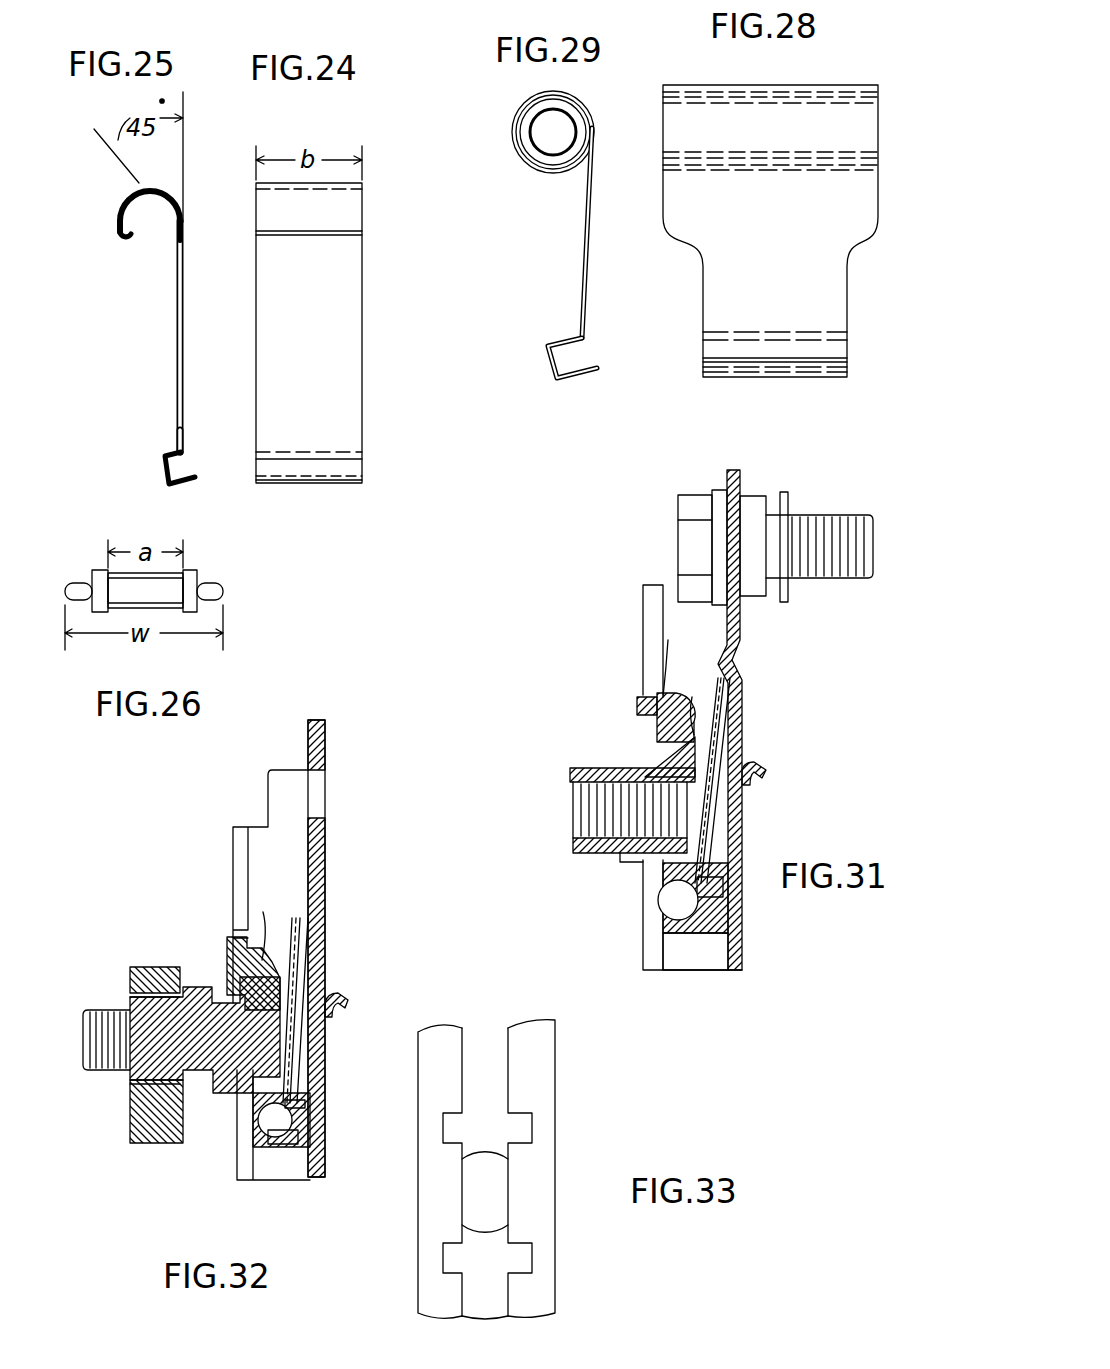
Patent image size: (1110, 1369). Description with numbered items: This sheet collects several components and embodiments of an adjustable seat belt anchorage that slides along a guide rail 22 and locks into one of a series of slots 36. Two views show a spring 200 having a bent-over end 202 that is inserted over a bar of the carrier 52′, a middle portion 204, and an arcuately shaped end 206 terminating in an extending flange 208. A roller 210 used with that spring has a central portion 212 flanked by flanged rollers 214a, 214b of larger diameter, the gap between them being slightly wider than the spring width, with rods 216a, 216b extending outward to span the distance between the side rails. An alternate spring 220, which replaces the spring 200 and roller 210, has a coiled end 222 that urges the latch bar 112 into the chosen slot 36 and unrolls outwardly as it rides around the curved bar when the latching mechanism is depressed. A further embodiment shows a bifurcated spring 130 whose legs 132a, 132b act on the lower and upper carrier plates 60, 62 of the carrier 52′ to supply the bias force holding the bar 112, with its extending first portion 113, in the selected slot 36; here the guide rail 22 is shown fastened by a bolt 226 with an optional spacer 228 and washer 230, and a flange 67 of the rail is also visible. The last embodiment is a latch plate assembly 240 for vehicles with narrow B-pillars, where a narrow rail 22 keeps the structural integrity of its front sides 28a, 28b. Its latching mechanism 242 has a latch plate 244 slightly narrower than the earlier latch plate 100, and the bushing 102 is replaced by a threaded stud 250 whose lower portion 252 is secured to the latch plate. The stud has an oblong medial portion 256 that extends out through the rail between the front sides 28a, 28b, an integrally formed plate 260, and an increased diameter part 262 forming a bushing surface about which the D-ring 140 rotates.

In FIG. 25, the spring 200 is at (163, 350).
In FIG. 24, the spring 200 is at (329, 386).
In FIG. 25, the bent-over end 202 is at (163, 470).
In FIG. 29, the bent-over end 202 is at (556, 366).
In FIG. 25, the middle portion 204 is at (176, 400).
In FIG. 25, the arcuately shaped end 206 is at (127, 190).
In FIG. 24, the arcuately shaped end 206 is at (335, 211).
In FIG. 25, the flange 208 is at (119, 232).
In FIG. 24, the flange 208 is at (300, 236).
In FIG. 26, the roller 210 is at (168, 612).
In FIG. 26, the central portion 212 is at (152, 590).
In FIG. 26, the flanged roller 214a is at (100, 570).
In FIG. 26, the flanged roller 214b is at (192, 580).
In FIG. 26, the rod 216a is at (80, 588).
In FIG. 26, the rod 216b is at (215, 595).
In FIG. 29, the spring 220 is at (571, 252).
In FIG. 28, the spring 220 is at (800, 239).
In FIG. 29, the coiled end 222 is at (518, 105).
In FIG. 28, the coiled end 222 is at (762, 85).
In FIG. 31, the guide rail 22 is at (732, 470).
In FIG. 32, the guide rail 22 is at (308, 741).
In FIG. 31, the bolt 226 is at (669, 517).
In FIG. 31, the spacer 228 is at (755, 491).
In FIG. 31, the washer 230 is at (786, 495).
In FIG. 31, the slot 36 is at (643, 690).
In FIG. 32, the slot 36 is at (235, 925).
In FIG. 33, the slot 36 is at (512, 1259).
In FIG. 31, the bar 112 is at (637, 707).
In FIG. 31, the latch plate 100 is at (668, 727).
In FIG. 31, the first portion 113 is at (687, 655).
In FIG. 32, the first portion 113 is at (262, 912).
In FIG. 31, the upper carrier plate 62 is at (692, 697).
In FIG. 31, the bushing 102 is at (620, 856).
In FIG. 31, the bifurcated spring 130 is at (710, 819).
In FIG. 32, the bifurcated spring 130 is at (302, 979).
In FIG. 31, the leg 132a is at (722, 734).
In FIG. 31, the leg 132b is at (716, 769).
In FIG. 31, the plate flange 67 is at (742, 693).
In FIG. 31, the lower carrier plate 60 is at (720, 881).
In FIG. 31, the carrier 52′ is at (682, 905).
In FIG. 32, the carrier 52′ is at (310, 1096).
In FIG. 32, the D-ring 140 is at (130, 993).
In FIG. 32, the latch plate assembly 240 is at (175, 967).
In FIG. 32, the medial portion 256 is at (235, 960).
In FIG. 33, the medial portion 256 is at (492, 1181).
In FIG. 32, the threaded stud 250 is at (100, 1012).
In FIG. 32, the increased diameter part 262 is at (128, 1083).
In FIG. 32, the plate 260 is at (140, 1096).
In FIG. 32, the lower portion 252 is at (228, 1096).
In FIG. 32, the latching mechanism 242 is at (245, 1141).
In FIG. 32, the latch plate 244 is at (272, 1151).
In FIG. 33, the front side 28a is at (440, 1078).
In FIG. 33, the front side 28b is at (555, 1088).